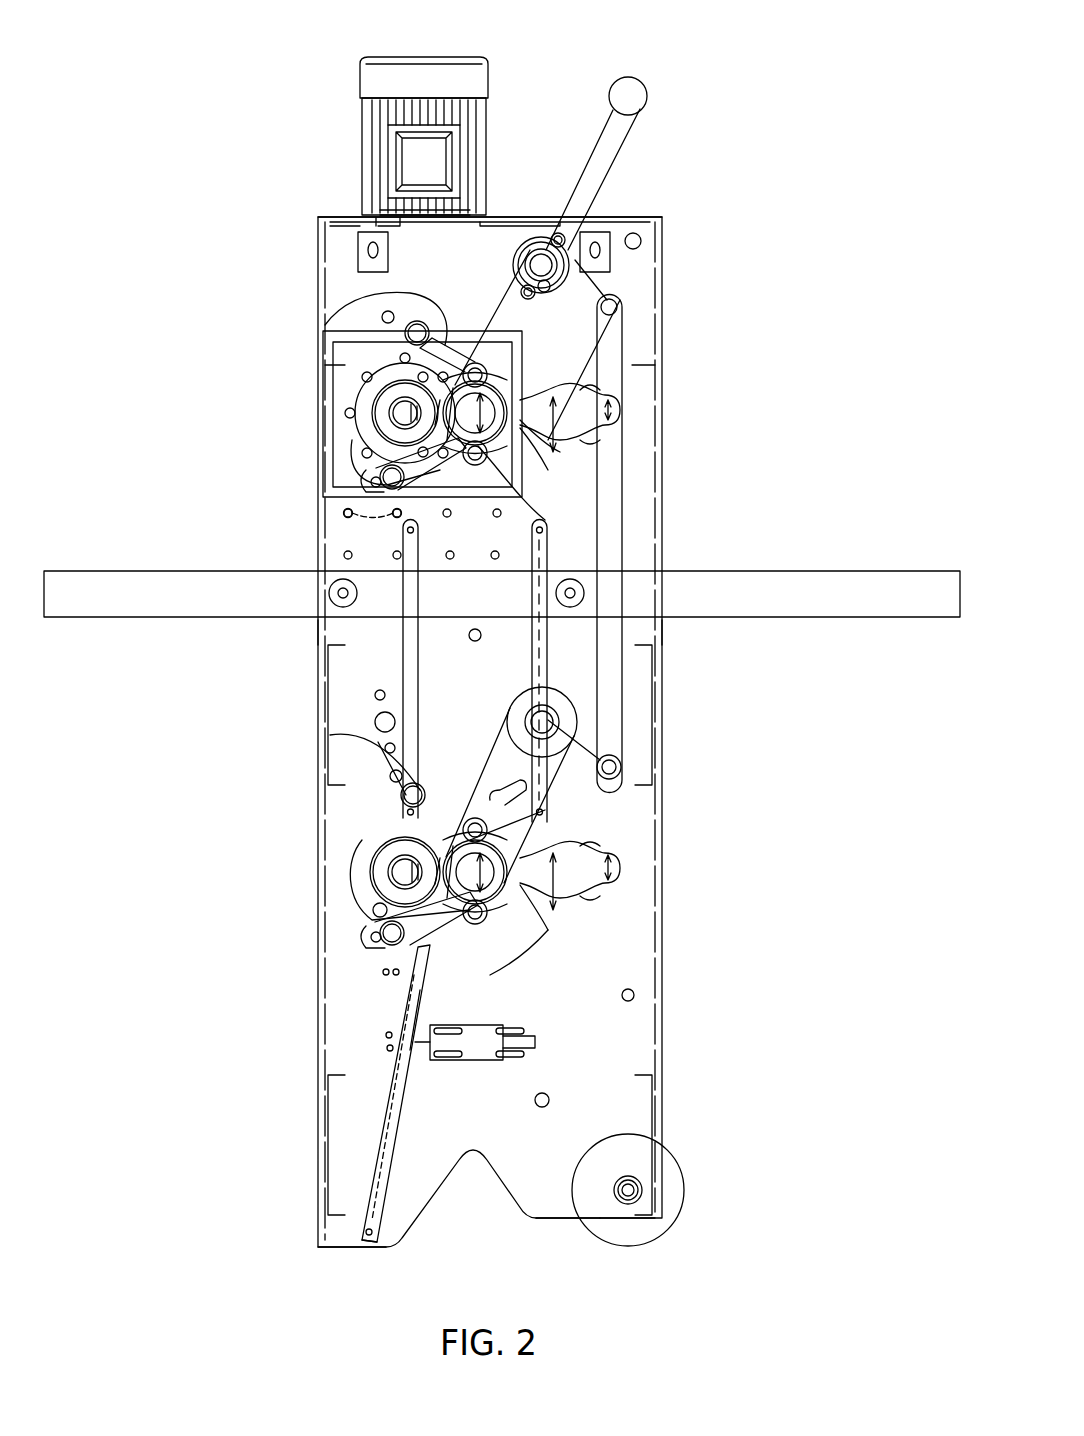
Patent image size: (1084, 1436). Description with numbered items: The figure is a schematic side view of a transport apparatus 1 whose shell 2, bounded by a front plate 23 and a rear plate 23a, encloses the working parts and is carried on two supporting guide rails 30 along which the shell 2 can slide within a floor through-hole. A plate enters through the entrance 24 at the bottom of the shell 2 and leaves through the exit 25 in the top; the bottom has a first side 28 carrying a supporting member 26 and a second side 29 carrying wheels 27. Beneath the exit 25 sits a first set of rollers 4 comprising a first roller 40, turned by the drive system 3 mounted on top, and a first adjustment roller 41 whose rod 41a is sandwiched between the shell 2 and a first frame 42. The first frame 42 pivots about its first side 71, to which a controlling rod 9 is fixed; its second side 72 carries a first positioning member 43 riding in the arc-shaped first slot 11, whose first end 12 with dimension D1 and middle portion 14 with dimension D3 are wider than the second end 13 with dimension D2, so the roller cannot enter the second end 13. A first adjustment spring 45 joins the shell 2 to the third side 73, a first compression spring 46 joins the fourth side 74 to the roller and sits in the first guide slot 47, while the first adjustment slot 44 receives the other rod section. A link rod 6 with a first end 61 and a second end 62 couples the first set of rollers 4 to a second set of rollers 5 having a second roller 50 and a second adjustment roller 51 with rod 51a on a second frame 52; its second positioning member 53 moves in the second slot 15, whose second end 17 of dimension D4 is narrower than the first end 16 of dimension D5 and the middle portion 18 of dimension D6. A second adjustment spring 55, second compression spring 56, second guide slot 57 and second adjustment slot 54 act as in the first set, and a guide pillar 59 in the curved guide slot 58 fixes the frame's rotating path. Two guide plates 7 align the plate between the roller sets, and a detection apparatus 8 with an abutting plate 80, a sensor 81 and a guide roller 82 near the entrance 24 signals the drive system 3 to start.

The transport apparatus 1 is at (216, 94).
The shell 2 is at (336, 232).
The drive system 3 is at (370, 82).
The first set of rollers 4 is at (348, 388).
The second set of rollers 5 is at (373, 828).
The link rod 6 is at (616, 674).
The guide plate 7 is at (410, 657).
The detection apparatus 8 is at (226, 1100).
The controlling rod 9 is at (646, 92).
The first slot 11 is at (796, 545).
The first end 12 is at (520, 470).
The second end 13 is at (600, 405).
The middle portion 14 is at (600, 440).
The second slot 15 is at (746, 955).
The first end 16 is at (520, 950).
The second end 17 is at (600, 858).
The middle portion 18 is at (600, 895).
The front plate 23 is at (664, 626).
The rear plate 23a is at (318, 626).
The entrance 24 is at (536, 1226).
The exit 25 is at (510, 210).
The supporting member 26 is at (345, 1250).
The wheel 27 is at (653, 1232).
The first side 28 is at (376, 1258).
The second side 29 is at (625, 1260).
The supporting guide rail 30 is at (124, 580).
The first roller 40 is at (392, 396).
The first adjustment roller 41 is at (505, 395).
The rod 41a is at (392, 418).
The first frame 42 is at (455, 410).
The first positioning member 43 is at (490, 440).
The first adjustment slot 44 is at (488, 368).
The first adjustment spring 45 is at (415, 335).
The first compression spring 46 is at (345, 513).
The first guide slot 47 is at (490, 450).
The second roller 50 is at (392, 862).
The second adjustment roller 51 is at (500, 845).
The rod 51a is at (400, 886).
The second frame 52 is at (455, 866).
The second positioning member 53 is at (548, 925).
The second adjustment slot 54 is at (462, 830).
The second adjustment spring 55 is at (488, 800).
The second compression spring 56 is at (390, 948).
The second guide slot 57 is at (488, 914).
The curved guide slot 58 is at (406, 786).
The guide pillar 59 is at (480, 821).
The first end 61 is at (612, 302).
The second end 62 is at (548, 810).
The first side 71 is at (532, 245).
The second side 72 is at (520, 440).
The third side 73 is at (458, 378).
The fourth side 74 is at (392, 478).
The abutting plate 80 is at (376, 1160).
The sensor 81 is at (470, 1050).
The guide roller 82 is at (547, 1095).
The maximum radial dimension D1 is at (485, 435).
The maximum radial dimension D2 is at (605, 404).
The maximum radial dimension D3 is at (612, 422).
The maximum radial dimension D4 is at (555, 850).
The maximum radial dimension D5 is at (612, 866).
The maximum radial dimension D6 is at (485, 861).